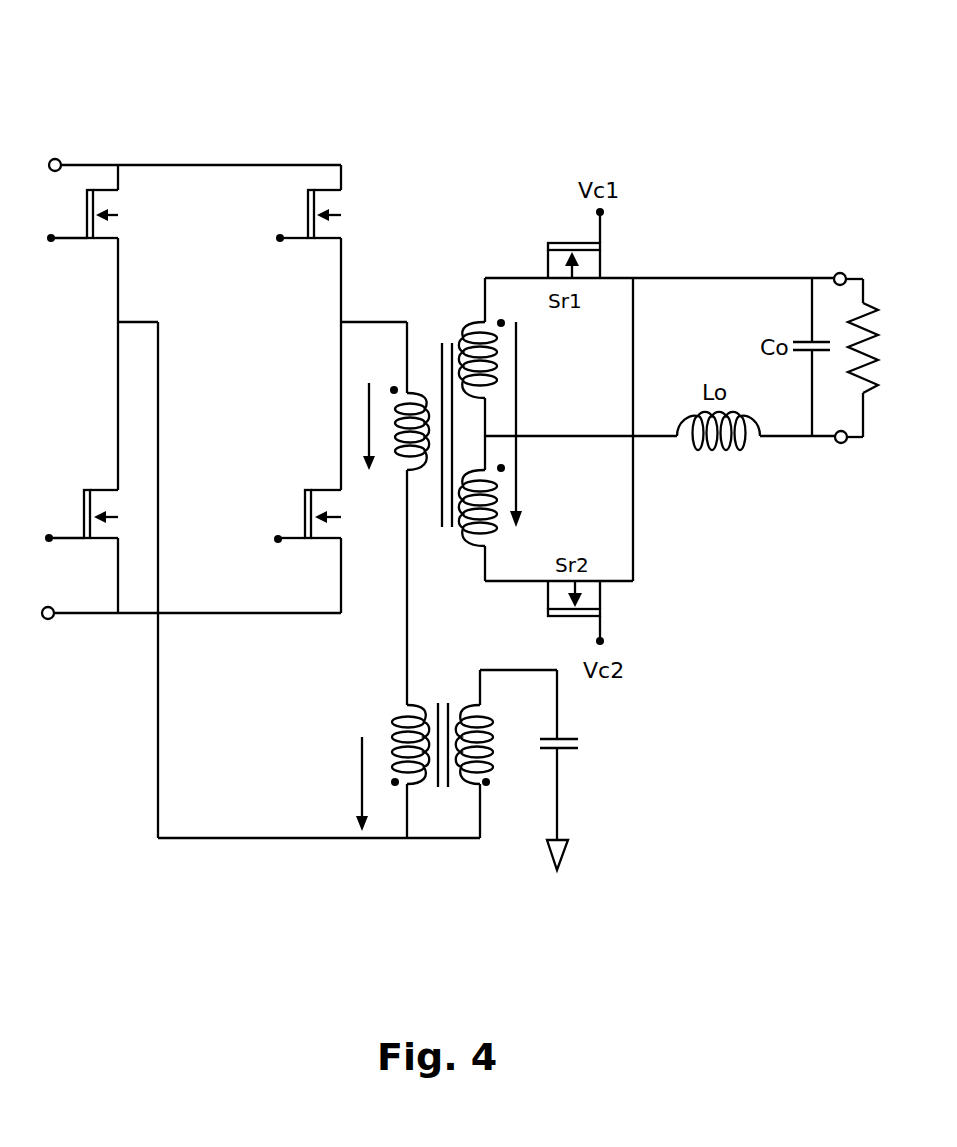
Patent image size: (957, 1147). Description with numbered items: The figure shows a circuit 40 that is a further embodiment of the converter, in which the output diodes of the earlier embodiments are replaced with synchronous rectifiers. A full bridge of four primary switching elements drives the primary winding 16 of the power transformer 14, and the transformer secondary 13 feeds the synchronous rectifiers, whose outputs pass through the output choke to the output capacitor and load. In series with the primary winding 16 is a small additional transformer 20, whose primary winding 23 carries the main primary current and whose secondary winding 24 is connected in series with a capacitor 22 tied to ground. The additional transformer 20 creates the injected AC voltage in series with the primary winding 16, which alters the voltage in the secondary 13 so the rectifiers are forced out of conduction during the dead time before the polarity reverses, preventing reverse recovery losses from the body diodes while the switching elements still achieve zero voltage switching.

The circuit 40 is at (507, 104).
The power transformer 14 is at (453, 290).
The primary winding 16 is at (403, 460).
The secondary 13 is at (492, 487).
The additional transformer 20 is at (438, 670).
The primary winding 23 is at (395, 703).
The secondary winding 24 is at (490, 735).
The capacitor 22 is at (580, 743).